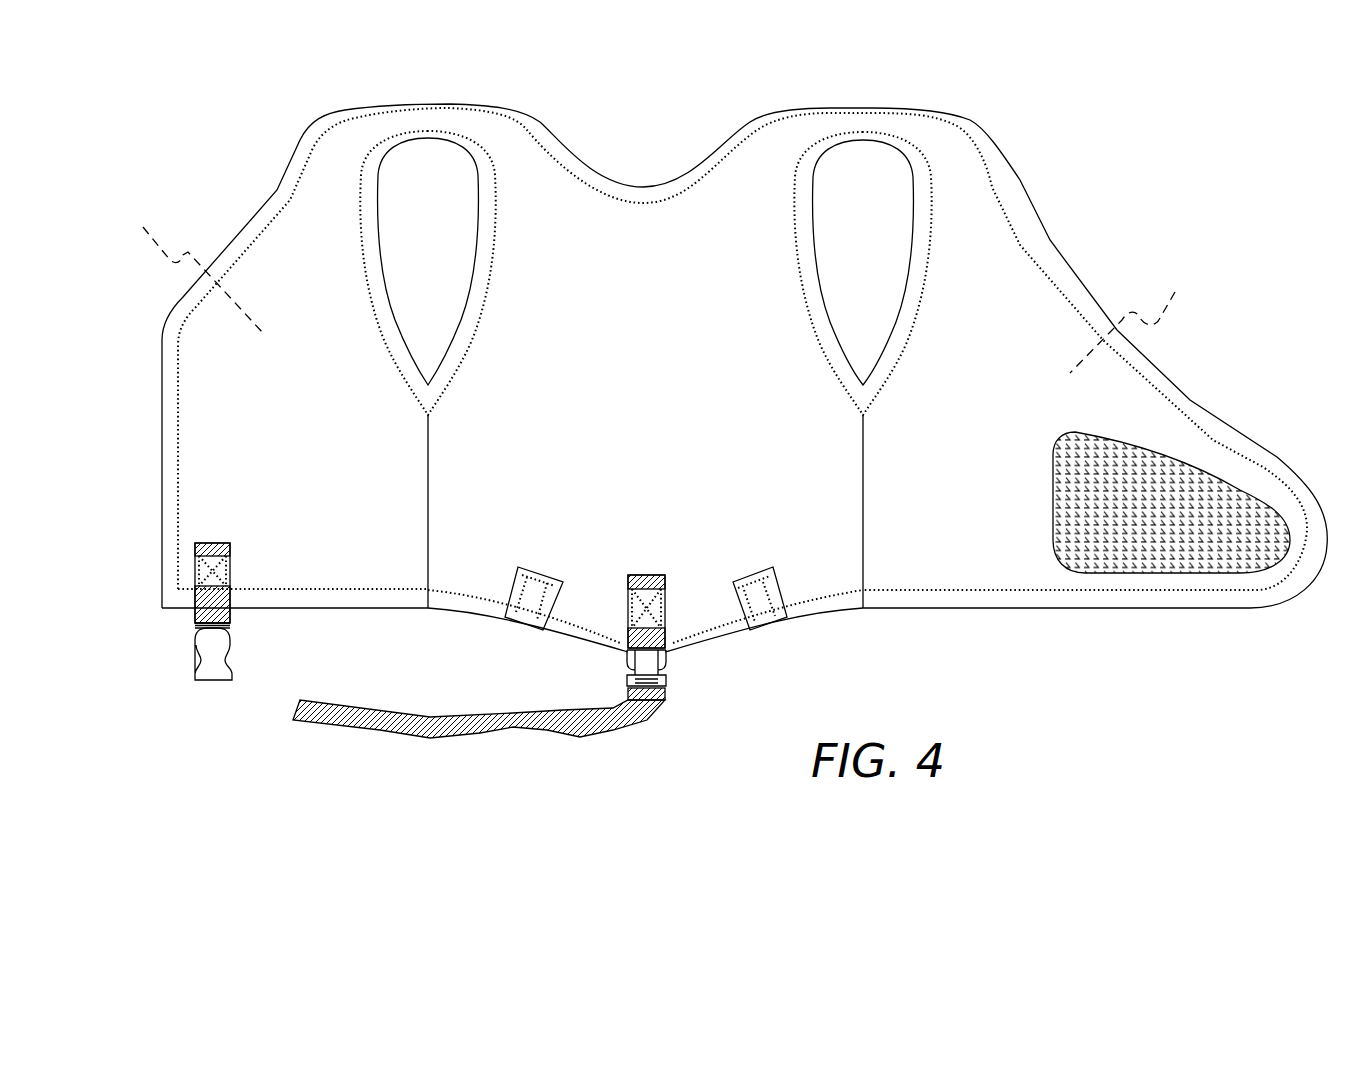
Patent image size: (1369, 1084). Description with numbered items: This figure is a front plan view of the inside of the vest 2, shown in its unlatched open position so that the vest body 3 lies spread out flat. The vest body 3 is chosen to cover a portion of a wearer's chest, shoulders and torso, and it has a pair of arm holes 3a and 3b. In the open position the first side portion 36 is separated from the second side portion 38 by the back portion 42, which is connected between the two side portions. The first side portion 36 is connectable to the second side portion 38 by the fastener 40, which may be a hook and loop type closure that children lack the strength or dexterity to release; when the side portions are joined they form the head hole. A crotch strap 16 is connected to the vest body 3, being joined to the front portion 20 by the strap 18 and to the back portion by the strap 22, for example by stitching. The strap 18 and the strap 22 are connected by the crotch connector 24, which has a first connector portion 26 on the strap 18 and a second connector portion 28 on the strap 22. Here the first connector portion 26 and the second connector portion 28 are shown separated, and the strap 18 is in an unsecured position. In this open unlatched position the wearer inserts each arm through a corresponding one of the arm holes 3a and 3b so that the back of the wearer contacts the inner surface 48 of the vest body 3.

The vest 2 is at (1110, 247).
The vest body 3 is at (643, 324).
The arm hole 3a is at (427, 273).
The arm hole 3b is at (862, 273).
The crotch strap 16 is at (193, 616).
The strap 18 is at (232, 616).
The front portion 20 is at (503, 768).
The strap 22 is at (600, 730).
The crotch connector 24 is at (213, 668).
The first connector portion 26 is at (205, 665).
The second connector portion 28 is at (665, 675).
The first side portion 36 is at (178, 480).
The second side portion 38 is at (1257, 463).
The fastener 40 is at (1168, 477).
The back portion 42 is at (645, 461).
The inner surface 48 is at (795, 530).